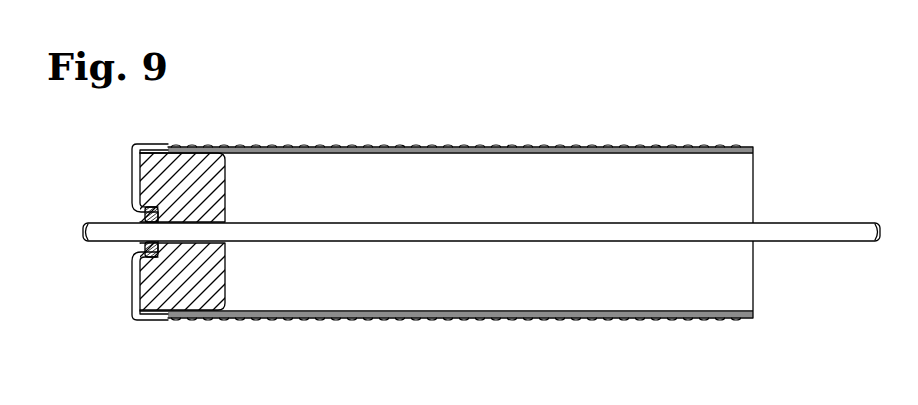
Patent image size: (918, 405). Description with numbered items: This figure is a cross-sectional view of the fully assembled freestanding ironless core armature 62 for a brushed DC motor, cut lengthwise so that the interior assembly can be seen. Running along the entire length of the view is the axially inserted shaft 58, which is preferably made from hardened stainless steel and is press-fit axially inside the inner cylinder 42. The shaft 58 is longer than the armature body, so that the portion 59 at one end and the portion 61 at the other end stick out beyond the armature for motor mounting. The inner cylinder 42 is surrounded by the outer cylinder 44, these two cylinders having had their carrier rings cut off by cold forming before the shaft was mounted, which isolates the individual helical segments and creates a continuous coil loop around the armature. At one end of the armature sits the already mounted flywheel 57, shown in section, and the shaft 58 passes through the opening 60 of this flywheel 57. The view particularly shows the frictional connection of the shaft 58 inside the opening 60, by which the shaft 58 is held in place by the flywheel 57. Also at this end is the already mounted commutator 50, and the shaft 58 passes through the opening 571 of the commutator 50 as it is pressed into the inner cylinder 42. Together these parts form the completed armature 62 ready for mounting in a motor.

The inner cylinder 42 is at (703, 148).
The outer cylinder 44 is at (565, 147).
The commutator 50 is at (132, 173).
The opening 571 is at (137, 214).
The opening 60 is at (205, 221).
The flywheel 57 is at (218, 280).
The shaft 58 is at (392, 232).
The shaft portion 59 is at (799, 237).
The shaft portion 61 is at (92, 236).
The ironless core armature 62 is at (438, 96).